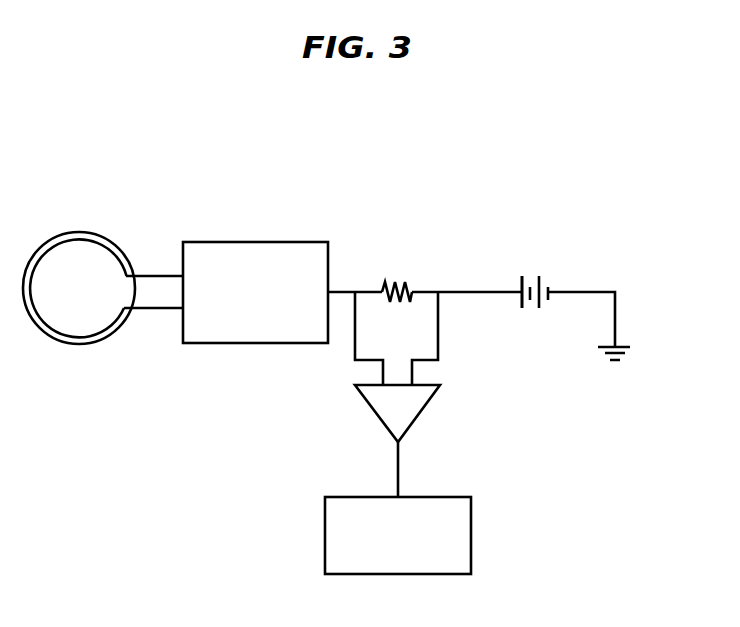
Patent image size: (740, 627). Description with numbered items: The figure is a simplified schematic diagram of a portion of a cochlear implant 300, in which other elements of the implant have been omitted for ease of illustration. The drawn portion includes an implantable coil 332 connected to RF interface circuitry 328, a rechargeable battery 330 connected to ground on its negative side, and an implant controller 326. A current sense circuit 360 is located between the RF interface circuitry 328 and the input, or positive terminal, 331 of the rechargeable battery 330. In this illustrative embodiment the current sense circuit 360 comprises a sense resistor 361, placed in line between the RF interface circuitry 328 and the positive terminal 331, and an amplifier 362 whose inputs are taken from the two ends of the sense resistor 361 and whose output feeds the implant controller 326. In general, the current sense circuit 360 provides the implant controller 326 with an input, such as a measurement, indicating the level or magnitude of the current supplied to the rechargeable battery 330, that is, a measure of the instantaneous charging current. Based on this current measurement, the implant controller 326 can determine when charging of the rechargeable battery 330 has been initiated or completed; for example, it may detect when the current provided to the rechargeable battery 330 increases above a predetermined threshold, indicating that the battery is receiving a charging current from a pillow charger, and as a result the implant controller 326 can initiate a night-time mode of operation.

The cochlear implant 300 is at (670, 143).
The implant controller 326 is at (471, 527).
The RF interface circuitry 328 is at (257, 242).
The rechargeable battery 330 is at (534, 246).
The input (positive terminal) of the rechargeable battery 331 is at (506, 318).
The implantable coil 332 is at (79, 232).
The current sense circuit 360 is at (370, 394).
The sense resistor 361 is at (399, 282).
The amplifier 362 is at (422, 410).